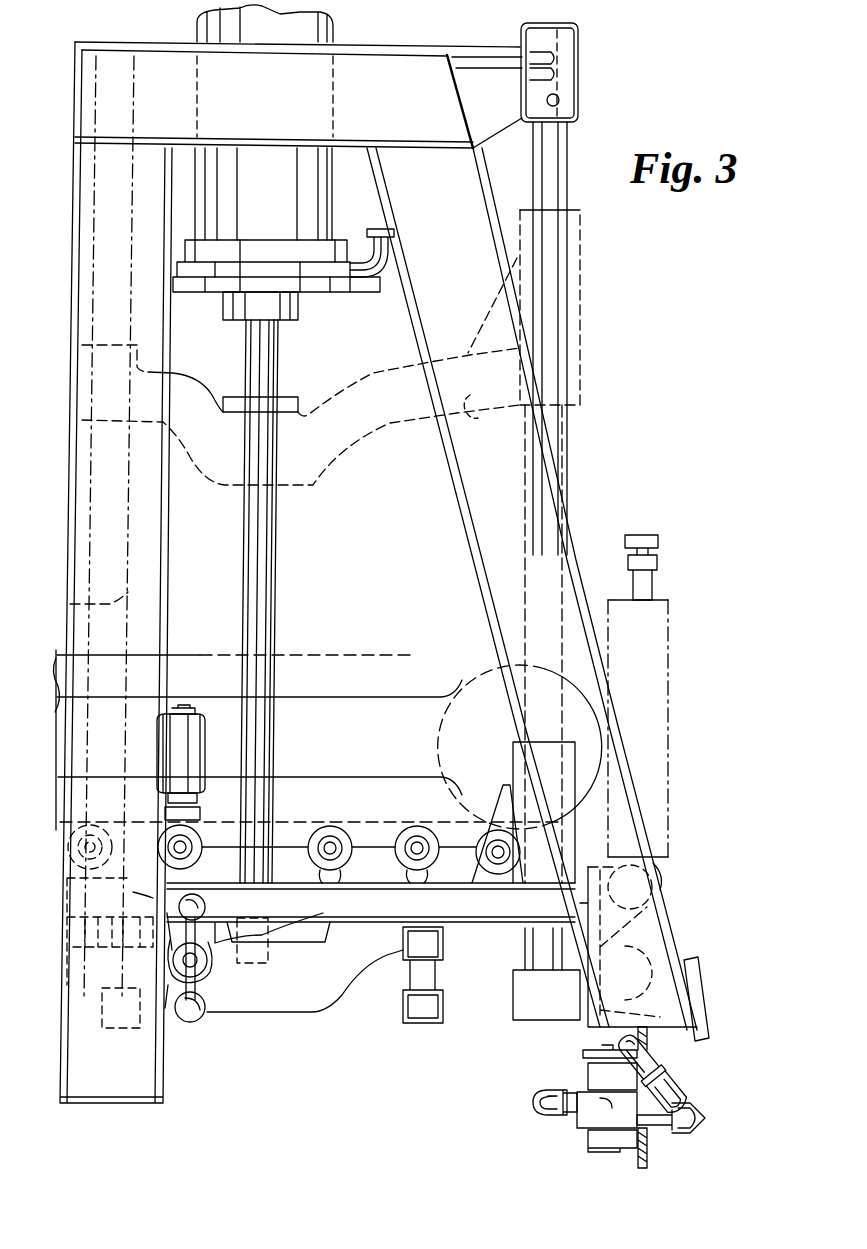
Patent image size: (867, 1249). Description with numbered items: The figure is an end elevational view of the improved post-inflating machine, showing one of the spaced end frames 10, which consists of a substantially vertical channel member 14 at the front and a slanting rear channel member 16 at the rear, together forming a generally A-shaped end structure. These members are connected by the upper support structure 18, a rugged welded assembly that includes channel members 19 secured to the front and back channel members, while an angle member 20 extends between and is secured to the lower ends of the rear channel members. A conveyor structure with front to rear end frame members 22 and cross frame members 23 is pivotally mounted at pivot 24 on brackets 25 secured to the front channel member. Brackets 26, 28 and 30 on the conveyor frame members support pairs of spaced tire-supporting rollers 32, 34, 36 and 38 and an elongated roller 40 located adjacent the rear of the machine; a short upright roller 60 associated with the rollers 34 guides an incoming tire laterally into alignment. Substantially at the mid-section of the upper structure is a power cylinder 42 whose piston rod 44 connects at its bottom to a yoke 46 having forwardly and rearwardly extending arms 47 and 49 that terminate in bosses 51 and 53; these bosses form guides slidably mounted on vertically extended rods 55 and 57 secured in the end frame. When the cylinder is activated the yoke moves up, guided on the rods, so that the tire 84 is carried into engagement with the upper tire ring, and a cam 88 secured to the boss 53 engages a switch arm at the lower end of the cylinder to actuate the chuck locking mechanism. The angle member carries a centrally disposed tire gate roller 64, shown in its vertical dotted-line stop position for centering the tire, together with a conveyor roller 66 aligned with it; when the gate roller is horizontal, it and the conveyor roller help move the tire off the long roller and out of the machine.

The end frame 10 is at (80, 546).
The vertical channel member 14 is at (150, 578).
The slanting rear channel member 16 is at (505, 575).
The upper support structure 18 is at (376, 78).
The channel member 19 is at (422, 70).
The angle member 20 is at (668, 1015).
The end frame member 22 is at (313, 898).
The cross frame member 23 is at (445, 955).
The pivot 24 is at (205, 968).
The bracket 25 is at (204, 1012).
The bracket 26 is at (58, 900).
The bracket 28 is at (190, 852).
The bracket 30 is at (380, 872).
The tire-supporting roller 32 is at (90, 818).
The tire-supporting roller 34 is at (195, 848).
The tire-supporting roller 36 is at (330, 830).
The tire-supporting roller 38 is at (412, 845).
The elongated roller 40 is at (488, 848).
The power cylinder 42 is at (230, 30).
The piston rod 44 is at (262, 556).
The yoke 46 is at (334, 442).
The forwardly extending arm 47 is at (232, 470).
The rearwardly extending arm 49 is at (467, 412).
The boss 51 is at (107, 368).
The boss 53 is at (580, 375).
The vertically extended rod 55 is at (70, 604).
The vertically extended rod 57 is at (556, 193).
The upright roller 60 is at (180, 748).
The tire gate roller 64 is at (640, 642).
The conveyor roller 66 is at (610, 875).
The tire 84 is at (388, 680).
The cam 88 is at (523, 255).